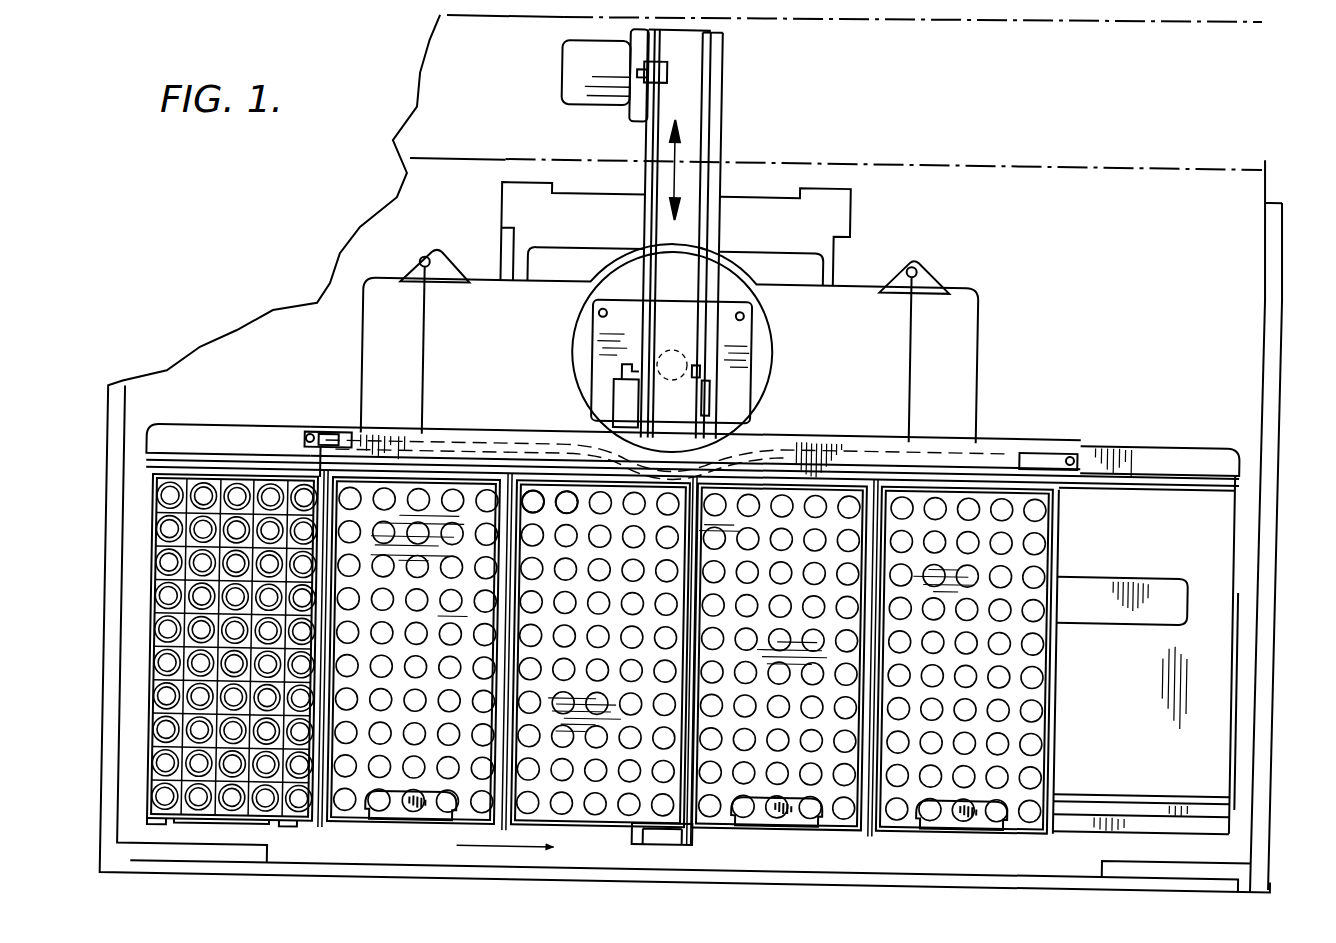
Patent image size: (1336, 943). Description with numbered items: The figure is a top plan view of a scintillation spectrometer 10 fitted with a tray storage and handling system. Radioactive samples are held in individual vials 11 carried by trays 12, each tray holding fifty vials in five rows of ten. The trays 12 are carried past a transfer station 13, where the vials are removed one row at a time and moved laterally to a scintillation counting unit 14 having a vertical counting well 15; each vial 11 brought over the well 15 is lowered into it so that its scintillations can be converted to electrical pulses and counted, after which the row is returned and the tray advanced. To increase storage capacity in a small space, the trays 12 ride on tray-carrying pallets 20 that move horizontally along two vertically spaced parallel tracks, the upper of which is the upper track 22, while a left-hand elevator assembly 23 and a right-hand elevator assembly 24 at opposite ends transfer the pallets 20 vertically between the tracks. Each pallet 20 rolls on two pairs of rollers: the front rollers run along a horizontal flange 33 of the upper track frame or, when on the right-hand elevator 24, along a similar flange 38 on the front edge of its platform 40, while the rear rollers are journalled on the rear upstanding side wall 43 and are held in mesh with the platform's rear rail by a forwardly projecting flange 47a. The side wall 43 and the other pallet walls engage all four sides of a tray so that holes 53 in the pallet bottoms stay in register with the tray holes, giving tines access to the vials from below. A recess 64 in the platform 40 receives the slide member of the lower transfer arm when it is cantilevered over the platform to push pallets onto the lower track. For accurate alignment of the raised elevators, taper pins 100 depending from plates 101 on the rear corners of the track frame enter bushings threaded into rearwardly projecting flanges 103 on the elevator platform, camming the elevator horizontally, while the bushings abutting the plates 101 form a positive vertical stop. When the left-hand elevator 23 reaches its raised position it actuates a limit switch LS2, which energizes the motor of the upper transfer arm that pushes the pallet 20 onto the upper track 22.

The scintillation spectrometer 10 is at (1292, 386).
The vials 11 is at (172, 574).
The trays 12 is at (148, 746).
The transfer station 13 is at (701, 839).
The scintillation counting unit 14 is at (856, 283).
The vertical counting well 15 is at (685, 350).
The tray-carrying pallets 20 is at (460, 833).
The upper track 22 is at (866, 462).
The left-hand elevator assembly 23 is at (148, 664).
The right-hand elevator assembly 24 is at (1244, 525).
The horizontal flange 33 is at (950, 827).
The flange 38 is at (1103, 826).
The platform 40 is at (1144, 655).
The rear upstanding side wall 43 is at (236, 476).
The flange 47a is at (1193, 482).
The holes 53 is at (567, 494).
The recess 64 is at (1160, 605).
The taper pins 100 is at (308, 440).
The plates 101 is at (352, 438).
The rearwardly projecting flanges 103 is at (178, 433).
The limit switch LS2 is at (330, 440).